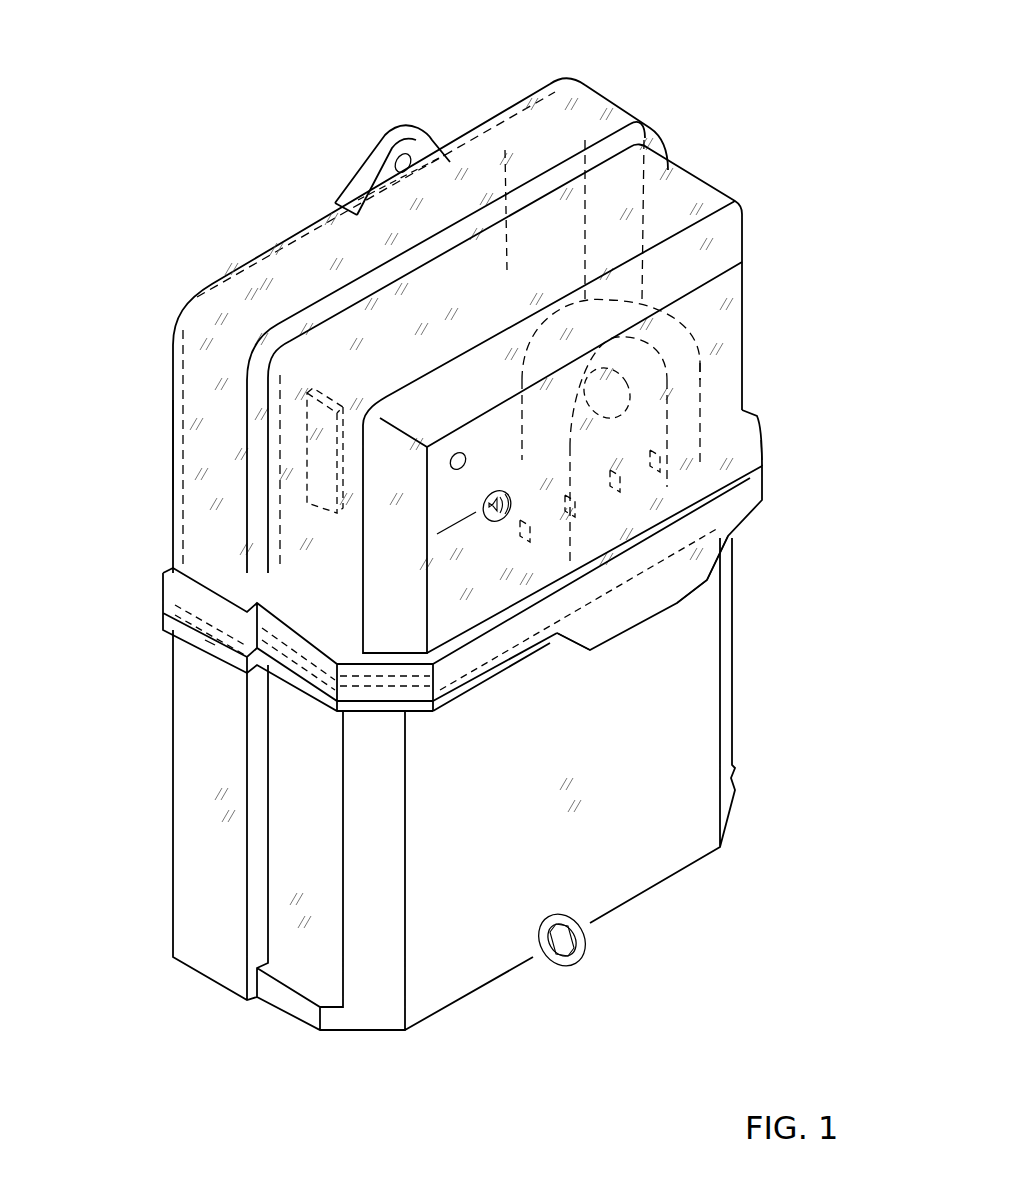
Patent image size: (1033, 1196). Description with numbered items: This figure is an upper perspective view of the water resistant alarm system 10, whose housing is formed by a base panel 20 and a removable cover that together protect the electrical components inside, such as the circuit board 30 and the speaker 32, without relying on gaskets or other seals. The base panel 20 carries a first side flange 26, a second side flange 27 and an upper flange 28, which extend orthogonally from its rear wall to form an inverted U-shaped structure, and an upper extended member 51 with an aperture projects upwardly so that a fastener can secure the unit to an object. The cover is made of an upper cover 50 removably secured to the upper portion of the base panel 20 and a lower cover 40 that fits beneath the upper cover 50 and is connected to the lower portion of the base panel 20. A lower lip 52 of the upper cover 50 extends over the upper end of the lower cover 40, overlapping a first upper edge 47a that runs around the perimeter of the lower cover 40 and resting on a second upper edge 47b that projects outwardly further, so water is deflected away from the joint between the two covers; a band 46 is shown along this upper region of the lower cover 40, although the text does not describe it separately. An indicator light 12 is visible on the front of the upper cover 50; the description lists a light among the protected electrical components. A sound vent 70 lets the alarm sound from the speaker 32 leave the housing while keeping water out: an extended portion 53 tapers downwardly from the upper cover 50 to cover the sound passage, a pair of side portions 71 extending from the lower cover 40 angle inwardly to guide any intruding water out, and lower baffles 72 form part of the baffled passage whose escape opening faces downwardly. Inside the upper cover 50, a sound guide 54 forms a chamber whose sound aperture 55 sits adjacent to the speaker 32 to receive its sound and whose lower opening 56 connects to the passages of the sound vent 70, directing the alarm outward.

The water resistant alarm system 10 is at (218, 90).
The power indicator LED 12 is at (458, 455).
The base panel 20 is at (526, 96).
The first side flange 26 is at (168, 447).
The second side flange 27 is at (744, 262).
The upper flange 28 is at (300, 237).
The circuit board 30 is at (297, 358).
The speaker 32 is at (502, 145).
The lower cover 40 is at (686, 875).
The mounting flange 46 is at (168, 593).
The first upper edge 47a is at (760, 530).
The second upper edge 47b is at (210, 650).
The upper cover 50 is at (710, 172).
The upper extended member 51 is at (390, 140).
The lower lip 52 is at (752, 507).
The extended portion 53 is at (678, 604).
The sound guide 54 is at (715, 348).
The sound aperture 55 is at (743, 412).
The lower opening 56 is at (763, 452).
The sound vent 70 is at (652, 608).
The side portions 71 is at (735, 552).
The lower baffle 72 is at (630, 628).